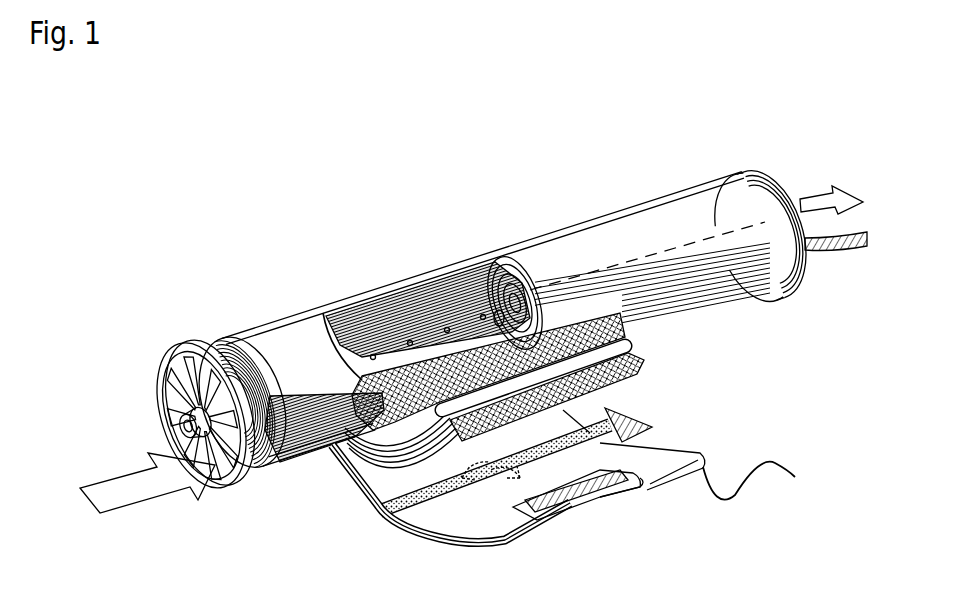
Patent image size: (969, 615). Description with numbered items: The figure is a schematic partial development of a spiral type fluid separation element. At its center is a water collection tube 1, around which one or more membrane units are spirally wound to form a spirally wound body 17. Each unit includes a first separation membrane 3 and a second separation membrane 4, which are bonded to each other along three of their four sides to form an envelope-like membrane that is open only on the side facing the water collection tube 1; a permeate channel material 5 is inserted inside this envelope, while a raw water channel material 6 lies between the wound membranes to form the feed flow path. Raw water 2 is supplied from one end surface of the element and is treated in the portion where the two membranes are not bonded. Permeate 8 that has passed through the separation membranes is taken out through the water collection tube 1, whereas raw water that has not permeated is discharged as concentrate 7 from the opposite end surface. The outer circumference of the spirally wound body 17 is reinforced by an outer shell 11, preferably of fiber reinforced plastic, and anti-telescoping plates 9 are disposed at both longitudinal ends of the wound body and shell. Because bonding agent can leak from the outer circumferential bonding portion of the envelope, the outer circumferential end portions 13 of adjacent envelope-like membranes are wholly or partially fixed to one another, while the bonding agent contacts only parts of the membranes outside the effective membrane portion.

The water collection tube 1 is at (425, 335).
The raw water 2 is at (137, 490).
The first separation membrane 3 is at (648, 447).
The second separation membrane 4 is at (623, 490).
The permeate channel material 5 is at (583, 503).
The raw water channel material 6 is at (637, 363).
The concentrate 7 is at (835, 255).
The permeate 8 is at (824, 208).
The anti-telescoping plates 9 is at (175, 415).
The outer shell 11 is at (733, 273).
The outer circumferential end portions 13 is at (762, 482).
The spirally wound body 17 is at (503, 345).